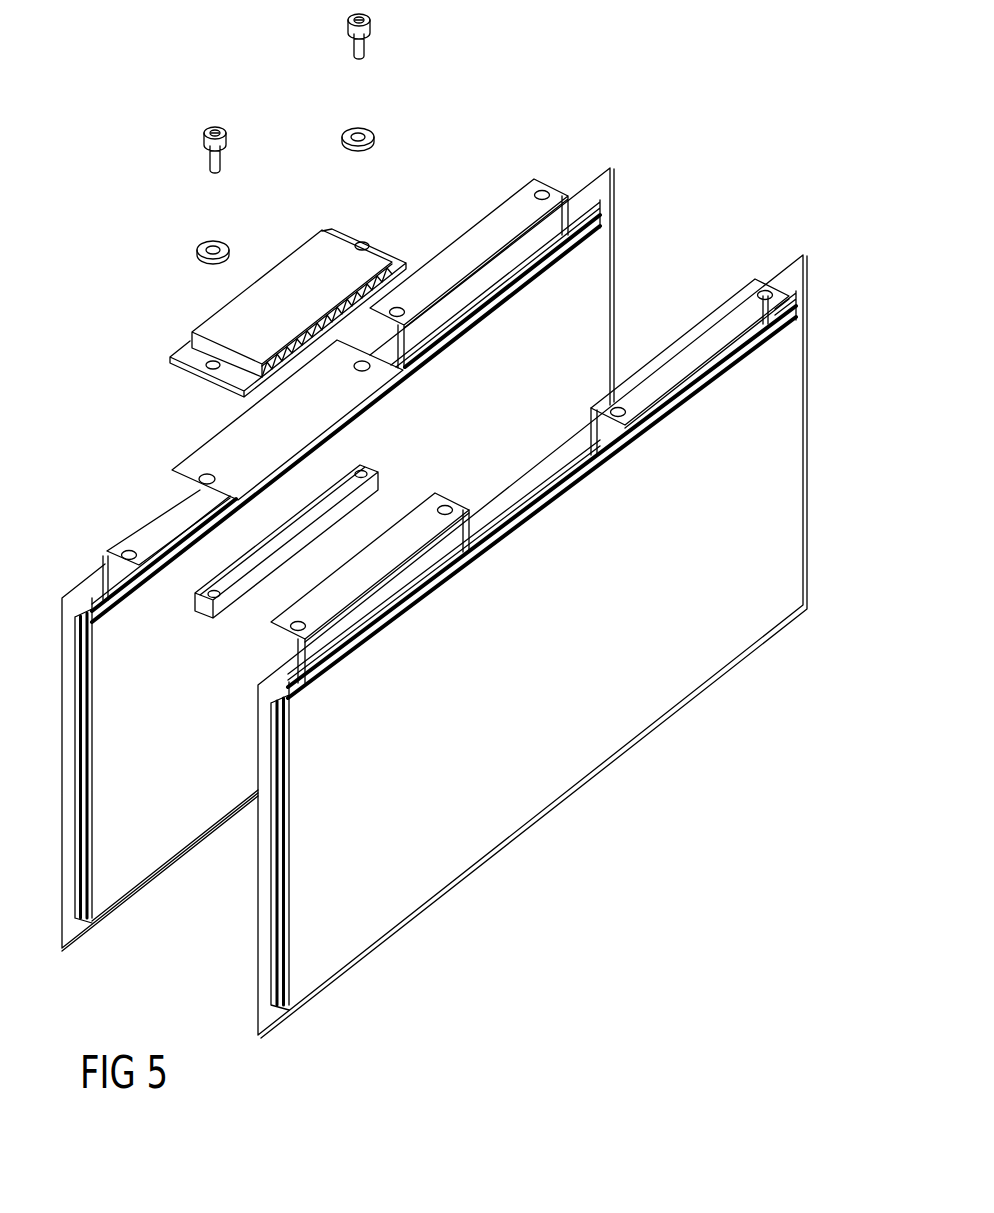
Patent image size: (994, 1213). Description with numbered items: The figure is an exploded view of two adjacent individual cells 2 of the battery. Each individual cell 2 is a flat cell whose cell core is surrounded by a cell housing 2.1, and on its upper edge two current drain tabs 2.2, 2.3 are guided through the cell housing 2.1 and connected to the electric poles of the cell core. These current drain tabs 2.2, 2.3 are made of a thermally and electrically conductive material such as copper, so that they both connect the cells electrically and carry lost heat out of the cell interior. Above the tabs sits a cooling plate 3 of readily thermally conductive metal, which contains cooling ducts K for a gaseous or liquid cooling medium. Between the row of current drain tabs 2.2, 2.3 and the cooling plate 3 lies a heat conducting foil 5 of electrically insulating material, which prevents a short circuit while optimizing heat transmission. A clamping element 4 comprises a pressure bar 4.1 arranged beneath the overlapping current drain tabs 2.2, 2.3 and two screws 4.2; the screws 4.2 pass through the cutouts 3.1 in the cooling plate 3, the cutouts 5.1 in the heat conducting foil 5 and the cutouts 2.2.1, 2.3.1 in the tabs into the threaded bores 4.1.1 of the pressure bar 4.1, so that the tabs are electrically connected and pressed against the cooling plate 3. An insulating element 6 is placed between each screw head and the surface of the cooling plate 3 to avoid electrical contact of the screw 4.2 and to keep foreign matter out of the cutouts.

The individual cell 2 is at (434, 603).
The cell housing 2.1 is at (532, 795).
The current drain tab 2.2 is at (378, 568).
The cutout 2.2.1 is at (447, 515).
The current drain tab 2.3 is at (680, 357).
The cutout 2.3.1 is at (763, 285).
The cooling plate 3 is at (223, 320).
The cutout 3.1 is at (187, 368).
The cooling duct K is at (292, 355).
The clamping element 4 is at (288, 360).
The pressure bar 4.1 is at (204, 608).
The threaded bore 4.1.1 is at (375, 472).
The screw 4.2 is at (367, 43).
The heat conducting foil 5 is at (240, 435).
The cutout 5.1 is at (208, 480).
The insulating element 6 is at (372, 135).